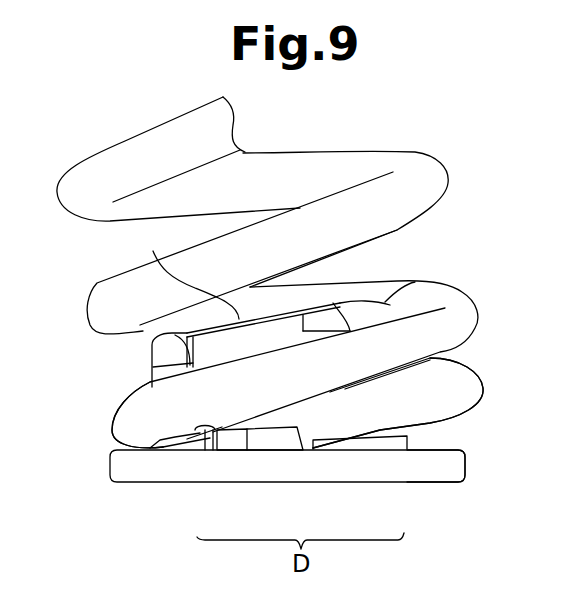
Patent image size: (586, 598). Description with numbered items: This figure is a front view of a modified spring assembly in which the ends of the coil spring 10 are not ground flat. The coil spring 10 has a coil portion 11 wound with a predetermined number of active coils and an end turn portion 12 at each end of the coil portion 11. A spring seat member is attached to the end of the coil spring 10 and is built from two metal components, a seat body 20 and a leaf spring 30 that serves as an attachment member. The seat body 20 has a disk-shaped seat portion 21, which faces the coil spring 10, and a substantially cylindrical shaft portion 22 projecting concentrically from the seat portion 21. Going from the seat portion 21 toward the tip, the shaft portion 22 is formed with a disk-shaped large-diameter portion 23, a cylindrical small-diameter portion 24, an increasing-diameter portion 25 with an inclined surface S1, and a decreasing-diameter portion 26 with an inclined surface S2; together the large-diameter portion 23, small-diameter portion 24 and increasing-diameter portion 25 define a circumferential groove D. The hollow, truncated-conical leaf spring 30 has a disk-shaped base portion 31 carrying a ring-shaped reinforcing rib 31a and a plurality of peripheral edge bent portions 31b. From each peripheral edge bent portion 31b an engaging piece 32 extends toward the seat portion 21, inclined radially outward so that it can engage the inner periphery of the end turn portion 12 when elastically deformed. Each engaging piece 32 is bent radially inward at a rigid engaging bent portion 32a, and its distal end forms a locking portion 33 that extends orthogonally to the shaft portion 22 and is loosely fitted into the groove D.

The coil spring 10 is at (456, 173).
The coil portion 11 is at (386, 221).
The end turn portion 12 is at (428, 410).
The seat body 20 is at (160, 495).
The seat portion 21 is at (430, 468).
The shaft portion 22 is at (112, 338).
The large-diameter portion 23 is at (230, 440).
The small-diameter portion 24 is at (268, 432).
The increasing-diameter portion 25 is at (298, 440).
The decreasing-diameter portion 26 is at (116, 398).
The leaf spring 30 is at (131, 375).
The base portion 31 is at (218, 330).
The reinforcing rib 31a is at (184, 274).
The peripheral edge bent portion 31b is at (410, 283).
The engaging piece 32 is at (155, 350).
The engaging bent portion 32a is at (168, 438).
The locking portion 33 is at (213, 447).